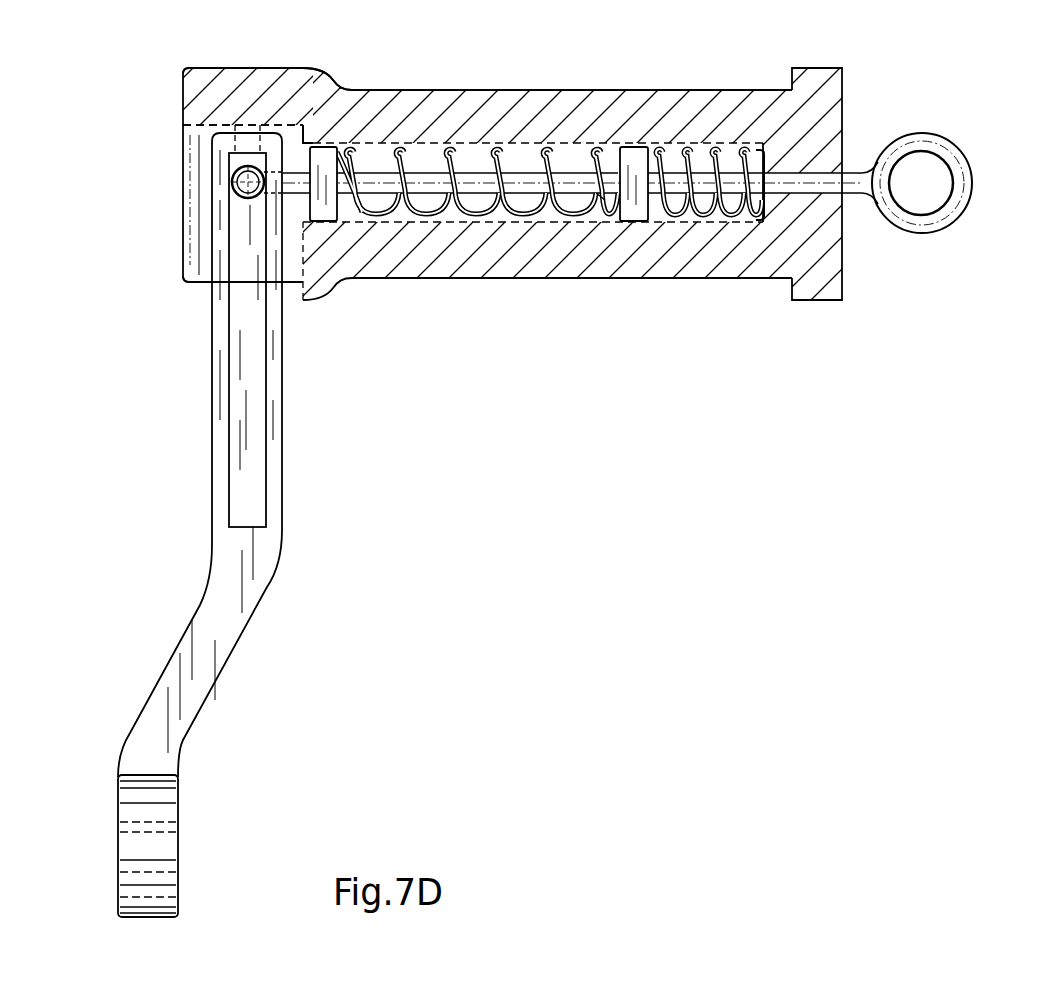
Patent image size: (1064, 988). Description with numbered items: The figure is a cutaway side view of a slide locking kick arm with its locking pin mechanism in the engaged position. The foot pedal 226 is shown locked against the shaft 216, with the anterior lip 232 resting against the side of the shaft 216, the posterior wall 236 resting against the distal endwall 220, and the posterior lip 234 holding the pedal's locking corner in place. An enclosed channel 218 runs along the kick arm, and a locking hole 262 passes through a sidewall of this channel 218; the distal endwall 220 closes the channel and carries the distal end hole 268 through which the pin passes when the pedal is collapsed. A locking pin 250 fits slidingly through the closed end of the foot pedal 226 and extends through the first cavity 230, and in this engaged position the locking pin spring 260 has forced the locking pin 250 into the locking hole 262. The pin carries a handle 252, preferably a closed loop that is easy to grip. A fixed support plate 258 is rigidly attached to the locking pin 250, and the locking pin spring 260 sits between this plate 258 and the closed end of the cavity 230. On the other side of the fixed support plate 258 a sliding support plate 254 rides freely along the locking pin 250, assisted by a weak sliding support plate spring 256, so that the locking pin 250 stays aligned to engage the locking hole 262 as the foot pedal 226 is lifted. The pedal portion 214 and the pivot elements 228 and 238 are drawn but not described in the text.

The pedal 214 is at (203, 627).
The shaft 216 is at (277, 478).
The enclosed channel 218 is at (242, 415).
The distal endwall 220 is at (222, 118).
The foot pedal 226 is at (648, 113).
The end flange 228 is at (842, 69).
The first cavity 230 is at (525, 162).
The anterior lip 232 is at (284, 285).
The posterior lip 234 is at (319, 70).
The posterior wall 236 is at (204, 128).
The pivot pin 238 is at (232, 183).
The locking pin 250 is at (507, 218).
The handle 252 is at (968, 154).
The sliding support plate 254 is at (323, 218).
The sliding support plate spring 256 is at (568, 222).
The fixed support plate 258 is at (623, 222).
The locking pin spring 260 is at (690, 223).
The locking hole 262 is at (320, 143).
The distal end hole 268 is at (250, 137).